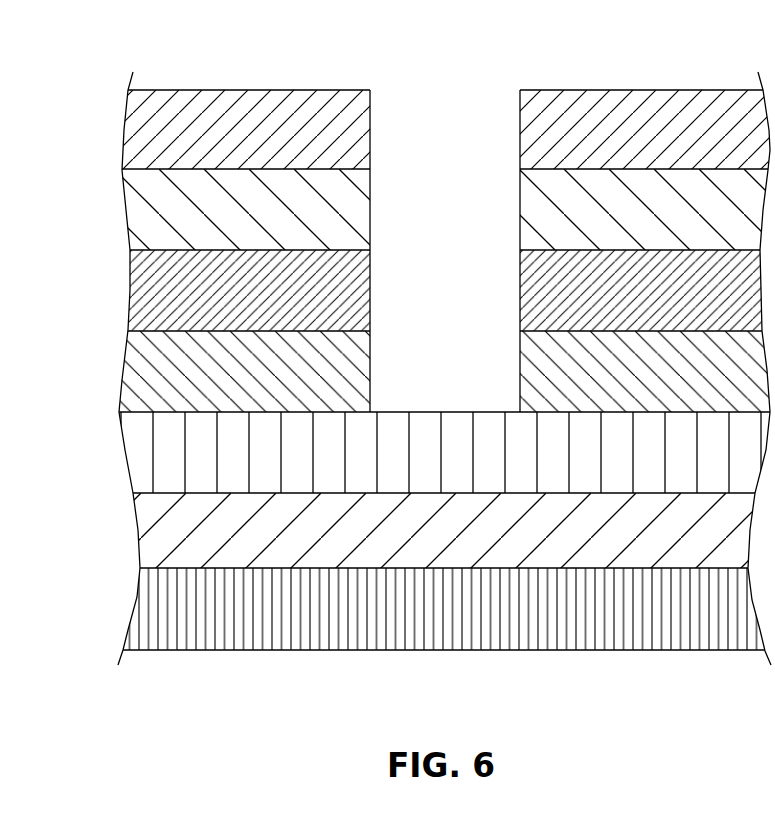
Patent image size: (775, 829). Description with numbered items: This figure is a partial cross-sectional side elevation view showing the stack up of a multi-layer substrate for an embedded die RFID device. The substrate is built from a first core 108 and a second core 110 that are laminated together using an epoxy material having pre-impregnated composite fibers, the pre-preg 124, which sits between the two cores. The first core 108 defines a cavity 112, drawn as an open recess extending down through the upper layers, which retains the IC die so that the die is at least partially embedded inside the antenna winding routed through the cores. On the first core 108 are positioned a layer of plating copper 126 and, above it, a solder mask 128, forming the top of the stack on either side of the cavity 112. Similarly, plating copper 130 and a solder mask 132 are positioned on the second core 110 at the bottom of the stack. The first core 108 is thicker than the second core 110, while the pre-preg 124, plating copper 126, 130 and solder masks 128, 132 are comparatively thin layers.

The first core 108 is at (130, 297).
The second core 110 is at (123, 450).
The cavity 112 is at (448, 283).
The pre-preg 124 is at (120, 380).
The plating copper 126 is at (127, 215).
The solder mask 128 is at (122, 133).
The plating copper 130 is at (140, 535).
The solder mask 132 is at (132, 623).